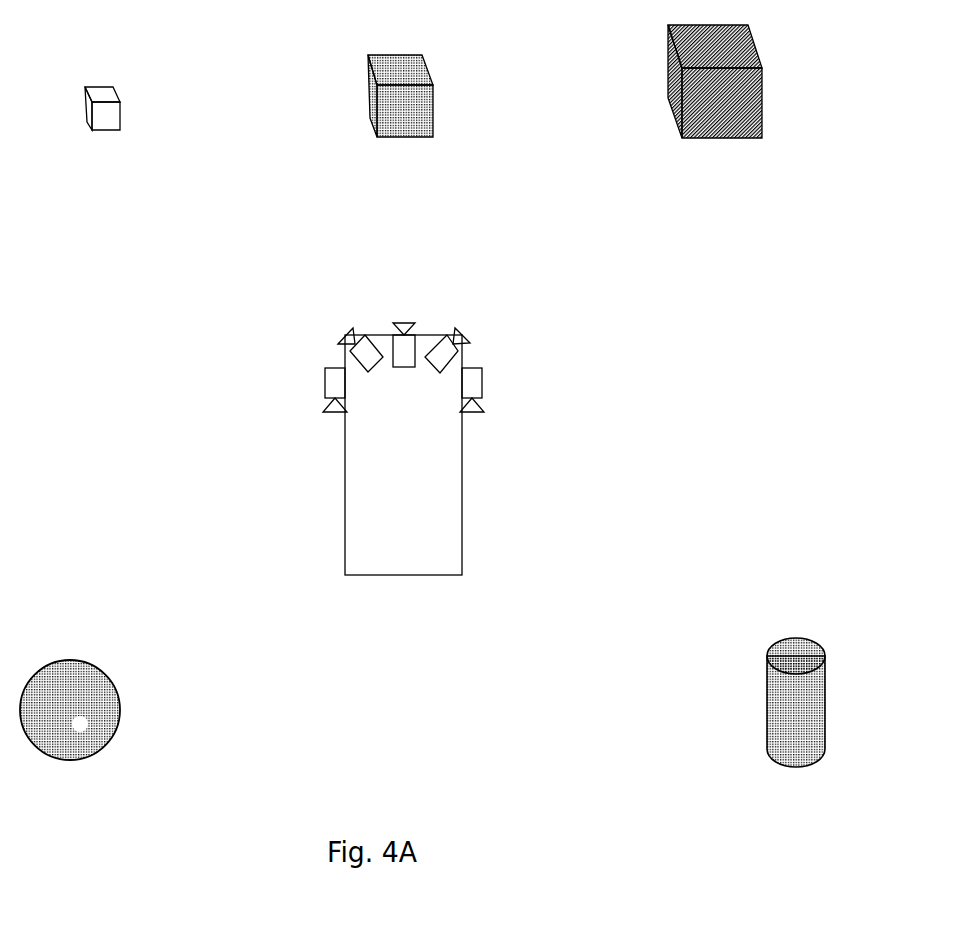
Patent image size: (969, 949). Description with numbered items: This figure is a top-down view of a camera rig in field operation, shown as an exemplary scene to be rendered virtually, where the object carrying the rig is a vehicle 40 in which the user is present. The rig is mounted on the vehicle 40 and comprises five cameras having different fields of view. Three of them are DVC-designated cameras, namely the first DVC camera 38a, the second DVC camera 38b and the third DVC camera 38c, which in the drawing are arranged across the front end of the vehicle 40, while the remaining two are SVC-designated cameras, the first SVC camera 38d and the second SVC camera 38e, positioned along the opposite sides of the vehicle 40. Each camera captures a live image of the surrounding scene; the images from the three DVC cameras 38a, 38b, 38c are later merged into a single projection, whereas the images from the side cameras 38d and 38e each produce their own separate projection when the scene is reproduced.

The DVC(1) camera 38a is at (347, 352).
The DVC(2) camera 38b is at (412, 342).
The DVC(3) camera 38c is at (467, 353).
The SVC(1) camera 38d is at (335, 382).
The SVC(2) camera 38e is at (480, 379).
The vehicle 40 is at (445, 538).